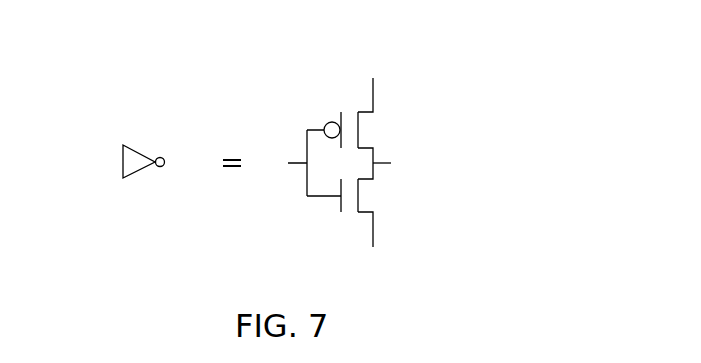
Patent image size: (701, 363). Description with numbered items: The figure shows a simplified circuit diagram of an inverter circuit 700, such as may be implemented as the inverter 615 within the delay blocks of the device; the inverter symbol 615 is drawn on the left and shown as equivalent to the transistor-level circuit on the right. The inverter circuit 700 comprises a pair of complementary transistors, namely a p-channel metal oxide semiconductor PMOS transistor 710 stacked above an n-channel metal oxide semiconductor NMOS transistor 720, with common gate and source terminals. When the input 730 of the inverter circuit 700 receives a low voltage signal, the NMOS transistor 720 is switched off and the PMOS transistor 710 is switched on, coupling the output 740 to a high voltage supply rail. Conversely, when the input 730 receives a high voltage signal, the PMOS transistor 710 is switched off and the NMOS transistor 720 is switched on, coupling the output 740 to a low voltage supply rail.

The inverter 615 is at (138, 167).
The inverter circuit 700 is at (373, 135).
The PMOS transistor 710 is at (378, 129).
The NMOS transistor 720 is at (378, 196).
The input 730 is at (290, 143).
The output 740 is at (412, 163).